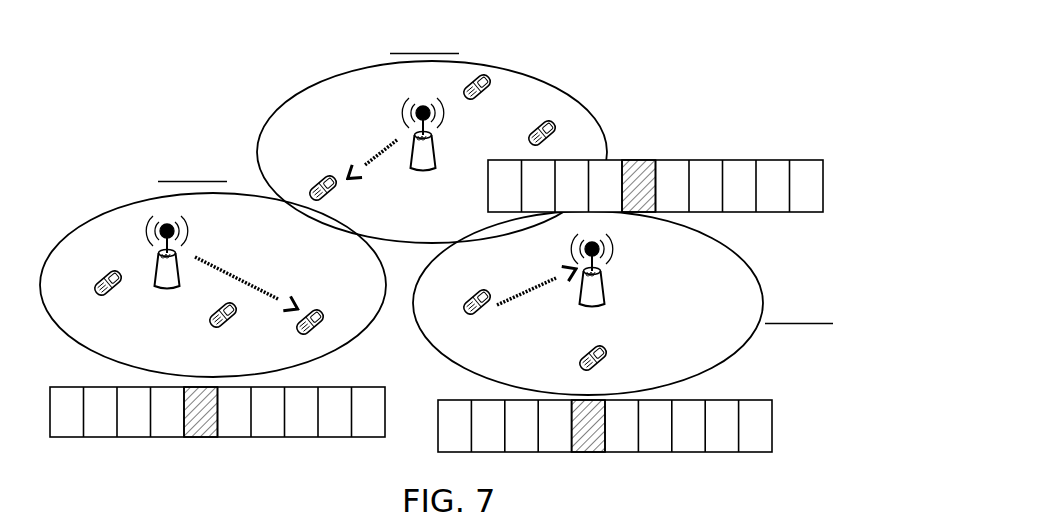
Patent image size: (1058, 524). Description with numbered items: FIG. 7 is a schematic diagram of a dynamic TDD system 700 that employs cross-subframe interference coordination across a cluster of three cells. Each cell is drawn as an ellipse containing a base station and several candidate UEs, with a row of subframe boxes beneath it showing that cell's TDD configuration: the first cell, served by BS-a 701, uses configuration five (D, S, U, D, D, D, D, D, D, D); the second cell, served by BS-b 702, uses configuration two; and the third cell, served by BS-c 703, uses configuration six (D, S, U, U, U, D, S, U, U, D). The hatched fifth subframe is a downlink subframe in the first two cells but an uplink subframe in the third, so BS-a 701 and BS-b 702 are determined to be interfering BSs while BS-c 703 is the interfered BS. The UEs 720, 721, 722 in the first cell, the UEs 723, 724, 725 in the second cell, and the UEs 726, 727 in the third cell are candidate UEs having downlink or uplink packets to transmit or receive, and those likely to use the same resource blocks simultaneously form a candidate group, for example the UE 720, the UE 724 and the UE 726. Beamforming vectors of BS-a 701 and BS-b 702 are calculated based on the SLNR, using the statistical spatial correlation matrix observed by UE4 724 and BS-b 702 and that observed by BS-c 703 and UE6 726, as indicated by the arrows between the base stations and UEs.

The dynamic TDD system 700 is at (256, 45).
The BS-a 701 is at (168, 282).
The BS-b 702 is at (419, 167).
The BS-c 703 is at (611, 285).
The user equipment UE0 720 is at (333, 305).
The user equipment UE1 721 is at (243, 336).
The user equipment UE2 722 is at (94, 314).
The user equipment UE3 723 is at (486, 112).
The UE4 724 is at (304, 167).
The user equipment UE5 725 is at (567, 120).
The UE6 726 is at (474, 332).
The user equipment UE7 727 is at (568, 360).